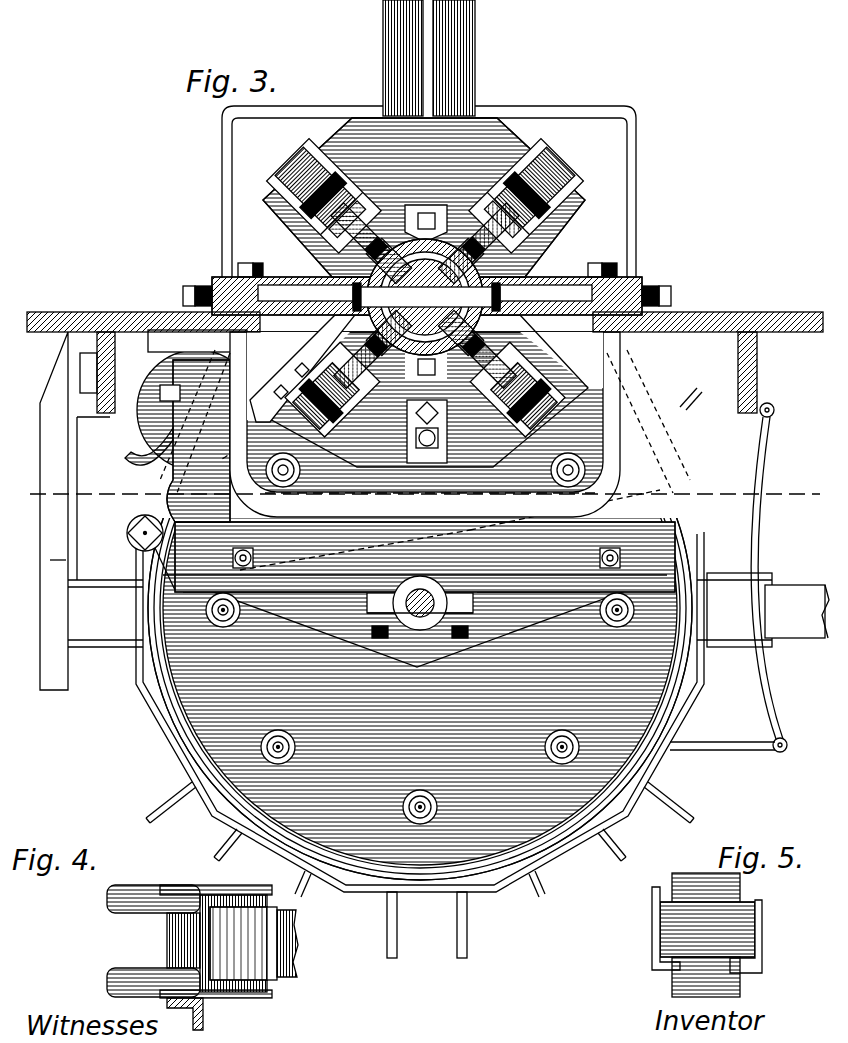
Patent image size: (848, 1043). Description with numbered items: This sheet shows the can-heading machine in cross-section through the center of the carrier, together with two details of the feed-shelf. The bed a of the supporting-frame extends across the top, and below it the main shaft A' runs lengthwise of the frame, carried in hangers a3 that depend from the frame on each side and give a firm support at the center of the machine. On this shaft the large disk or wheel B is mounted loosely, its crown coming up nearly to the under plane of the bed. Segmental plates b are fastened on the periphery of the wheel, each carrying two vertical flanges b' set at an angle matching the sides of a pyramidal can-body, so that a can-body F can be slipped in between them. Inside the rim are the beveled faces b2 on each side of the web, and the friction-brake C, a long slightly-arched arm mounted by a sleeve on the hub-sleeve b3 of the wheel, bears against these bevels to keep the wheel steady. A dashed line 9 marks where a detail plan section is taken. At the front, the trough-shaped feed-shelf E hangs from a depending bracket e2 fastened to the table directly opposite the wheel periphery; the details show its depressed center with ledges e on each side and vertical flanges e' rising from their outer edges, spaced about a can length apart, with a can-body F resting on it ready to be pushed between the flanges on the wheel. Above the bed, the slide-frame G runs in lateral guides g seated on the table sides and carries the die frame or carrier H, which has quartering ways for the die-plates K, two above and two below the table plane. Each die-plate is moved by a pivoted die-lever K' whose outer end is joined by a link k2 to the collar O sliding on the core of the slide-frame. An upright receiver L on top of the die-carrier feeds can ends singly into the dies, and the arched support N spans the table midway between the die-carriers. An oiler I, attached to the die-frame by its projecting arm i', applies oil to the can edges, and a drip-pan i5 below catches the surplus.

In FIG. 3, the upright receiver L is at (462, 30).
In FIG. 3, the arched support N is at (637, 180).
In FIG. 3, the die frame or carrier H is at (424, 197).
In FIG. 3, the link k2 is at (478, 190).
In FIG. 3, the collar O is at (428, 210).
In FIG. 3, the lateral guide g is at (262, 282).
In FIG. 3, the bed a is at (150, 312).
In FIG. 3, the slide-frame G is at (290, 316).
In FIG. 3, the projecting arm i' is at (302, 368).
In FIG. 3, the oiler I is at (150, 415).
In FIG. 3, the drip-pan i5 is at (152, 458).
In FIG. 3, the section line 9 is at (420, 495).
In FIG. 3, the depending bracket e2 is at (55, 549).
In FIG. 3, the feed-shelf E is at (50, 618).
In FIG. 4, the feed-shelf E is at (148, 941).
In FIG. 5, the feed-shelf E is at (735, 893).
In FIG. 3, the hanger a3 is at (419, 541).
In FIG. 3, the shaft A' is at (420, 599).
In FIG. 3, the friction-brake C is at (345, 622).
In FIG. 3, the hub-sleeve b3 is at (410, 795).
In FIG. 3, the strap T is at (714, 756).
In FIG. 3, the beveled face b2 is at (350, 866).
In FIG. 3, the disk or wheel B is at (528, 862).
In FIG. 4, the disk or wheel B is at (298, 945).
In FIG. 3, the die-plate K is at (426, 406).
In FIG. 4, the vertical flange e' is at (217, 944).
In FIG. 5, the vertical flange e' is at (701, 930).
In FIG. 4, the segmental plate b is at (287, 928).
In FIG. 4, the vertical flange b' is at (233, 943).
In FIG. 4, the can-body F is at (240, 995).
In FIG. 5, the can-body F is at (707, 929).
In FIG. 5, the ledge e is at (705, 977).